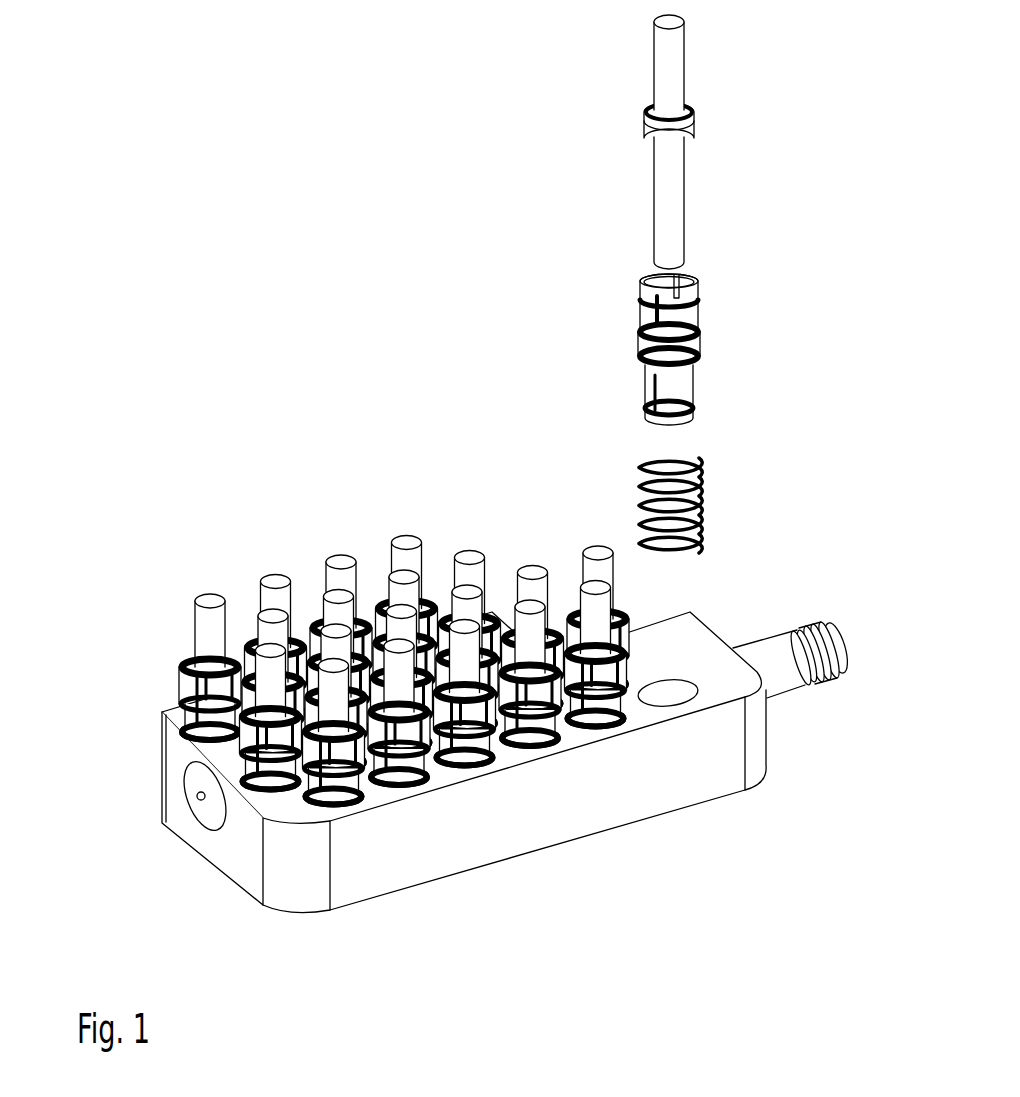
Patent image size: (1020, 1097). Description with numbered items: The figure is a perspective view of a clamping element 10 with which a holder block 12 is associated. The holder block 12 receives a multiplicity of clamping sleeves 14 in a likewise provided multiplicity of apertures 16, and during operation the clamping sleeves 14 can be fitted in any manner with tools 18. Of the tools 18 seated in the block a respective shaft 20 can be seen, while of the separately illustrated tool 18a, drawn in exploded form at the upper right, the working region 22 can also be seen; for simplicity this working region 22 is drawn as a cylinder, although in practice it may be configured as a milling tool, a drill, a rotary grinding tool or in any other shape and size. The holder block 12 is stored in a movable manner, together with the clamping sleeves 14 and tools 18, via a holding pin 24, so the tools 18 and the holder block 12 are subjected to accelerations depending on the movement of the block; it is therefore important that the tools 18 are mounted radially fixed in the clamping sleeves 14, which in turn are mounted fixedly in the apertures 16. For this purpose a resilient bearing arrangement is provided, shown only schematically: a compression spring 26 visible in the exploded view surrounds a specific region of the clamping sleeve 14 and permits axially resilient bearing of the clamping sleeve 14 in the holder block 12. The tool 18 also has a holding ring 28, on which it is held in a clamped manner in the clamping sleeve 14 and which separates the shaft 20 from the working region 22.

The clamping element 10 is at (496, 518).
The holder block 12 is at (423, 862).
The clamping sleeve 14 is at (255, 772).
The aperture 16 is at (680, 686).
The tool 18 is at (277, 582).
The separately illustrated tool 18a is at (690, 333).
The shaft 20 is at (205, 628).
The working region 22 is at (622, 216).
The holding pin 24 is at (790, 677).
The compression spring 26 is at (700, 497).
The holding ring 28 is at (688, 128).